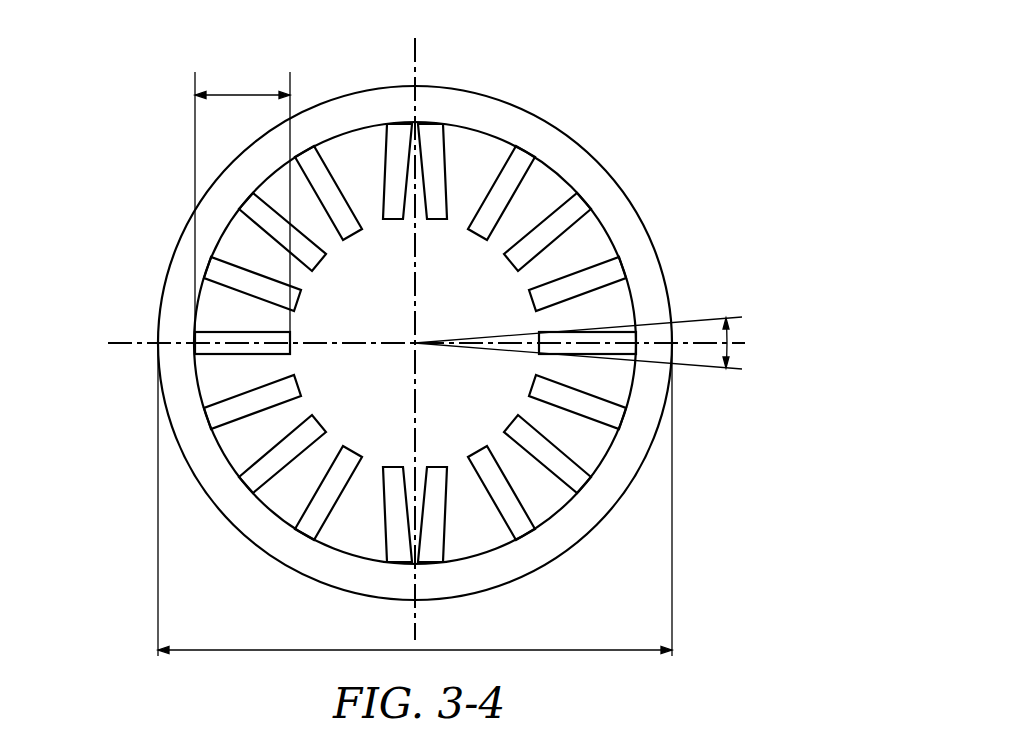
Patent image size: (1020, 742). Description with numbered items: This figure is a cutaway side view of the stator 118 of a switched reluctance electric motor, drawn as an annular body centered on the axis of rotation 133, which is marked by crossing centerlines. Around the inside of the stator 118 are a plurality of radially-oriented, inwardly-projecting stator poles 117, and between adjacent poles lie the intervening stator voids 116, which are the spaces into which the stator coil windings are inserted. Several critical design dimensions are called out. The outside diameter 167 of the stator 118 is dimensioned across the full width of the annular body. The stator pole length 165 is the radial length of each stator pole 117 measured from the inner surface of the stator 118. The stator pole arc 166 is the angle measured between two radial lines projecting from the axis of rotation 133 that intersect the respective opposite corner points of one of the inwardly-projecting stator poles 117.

The stator voids 116 is at (217, 377).
The stator poles 117 is at (238, 332).
The stator 118 is at (166, 234).
The axis of rotation 133 is at (414, 344).
The stator pole length 165 is at (262, 87).
The stator pole arc 166 is at (732, 343).
The outside diameter 167 is at (415, 499).